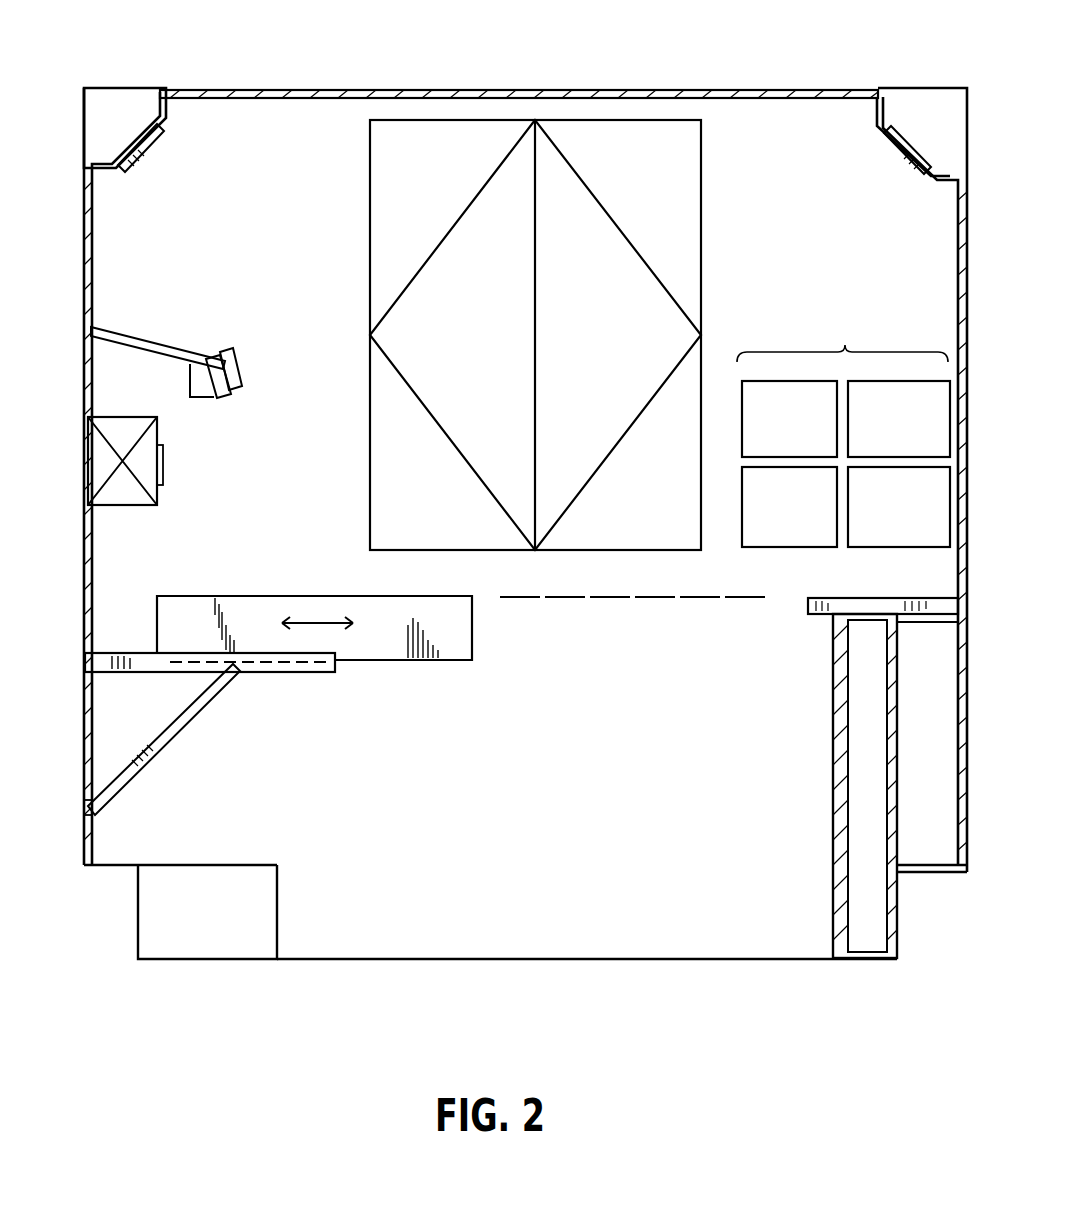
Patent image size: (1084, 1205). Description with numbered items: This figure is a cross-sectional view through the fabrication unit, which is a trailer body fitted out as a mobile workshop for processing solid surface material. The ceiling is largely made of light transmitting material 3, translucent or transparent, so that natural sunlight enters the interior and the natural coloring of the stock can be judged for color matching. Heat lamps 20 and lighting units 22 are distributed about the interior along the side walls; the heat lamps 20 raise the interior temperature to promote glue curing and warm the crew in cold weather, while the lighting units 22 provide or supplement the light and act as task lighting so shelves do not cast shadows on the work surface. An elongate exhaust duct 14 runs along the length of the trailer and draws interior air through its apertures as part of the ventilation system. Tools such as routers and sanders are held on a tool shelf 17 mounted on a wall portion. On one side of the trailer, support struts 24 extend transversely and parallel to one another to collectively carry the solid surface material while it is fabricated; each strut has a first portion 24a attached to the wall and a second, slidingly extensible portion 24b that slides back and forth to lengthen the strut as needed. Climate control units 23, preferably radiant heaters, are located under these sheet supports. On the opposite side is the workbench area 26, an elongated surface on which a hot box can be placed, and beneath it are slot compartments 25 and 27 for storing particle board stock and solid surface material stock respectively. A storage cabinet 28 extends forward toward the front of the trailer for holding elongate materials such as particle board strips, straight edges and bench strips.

The light transmitting material 3 is at (407, 90).
The exhaust duct 14 is at (125, 495).
The tool shelf 17 is at (170, 354).
The heat lamps 20 is at (147, 152).
The lighting units 22 is at (200, 378).
The climate control units 23 is at (278, 905).
The support struts 24 is at (508, 686).
The first portion 24a is at (197, 715).
The second, slidingly extensible portion 24b is at (460, 630).
The slot compartment 25 is at (940, 845).
The workbench area 26 is at (838, 598).
The slot compartment 27 is at (862, 856).
The storage cabinet 28 is at (843, 431).